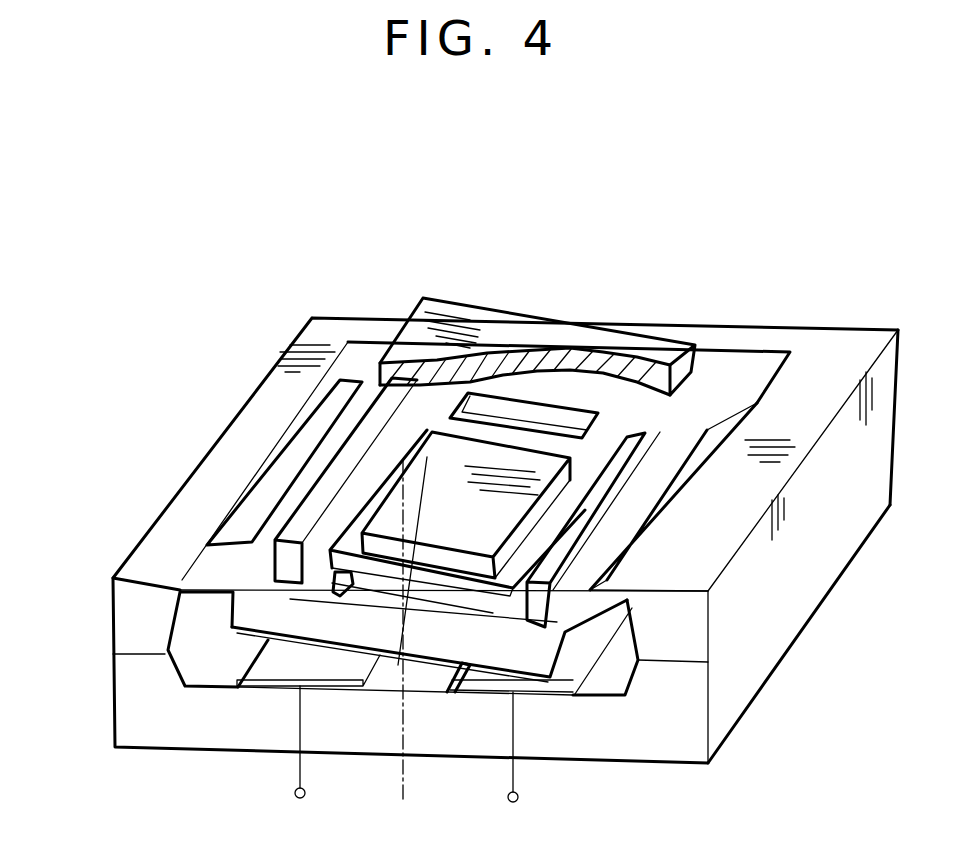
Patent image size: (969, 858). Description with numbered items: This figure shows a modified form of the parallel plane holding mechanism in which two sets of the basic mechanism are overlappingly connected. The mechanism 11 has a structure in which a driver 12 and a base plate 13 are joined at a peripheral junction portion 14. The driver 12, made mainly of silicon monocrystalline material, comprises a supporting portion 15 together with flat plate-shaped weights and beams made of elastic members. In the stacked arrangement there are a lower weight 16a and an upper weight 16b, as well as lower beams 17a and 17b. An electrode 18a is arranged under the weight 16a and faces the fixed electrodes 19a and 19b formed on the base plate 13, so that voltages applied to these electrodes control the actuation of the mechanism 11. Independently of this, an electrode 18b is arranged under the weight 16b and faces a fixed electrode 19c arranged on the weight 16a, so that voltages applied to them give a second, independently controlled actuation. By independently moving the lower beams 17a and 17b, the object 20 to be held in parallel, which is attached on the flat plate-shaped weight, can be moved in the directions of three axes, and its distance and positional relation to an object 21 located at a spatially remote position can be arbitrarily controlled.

The mechanism 11 is at (128, 698).
The driver 12 is at (693, 626).
The base plate 13 is at (688, 725).
The peripheral junction portion 14 is at (133, 654).
The supporting portion 15 is at (120, 608).
The weight 16a is at (527, 628).
The weight 16b is at (337, 547).
The lower beam 17a is at (222, 558).
The lower beam 17b is at (597, 428).
The electrode 18a is at (441, 663).
The electrode 18b is at (343, 588).
The fixed electrode 19a is at (265, 688).
The fixed electrode 19b is at (592, 688).
The fixed electrode 19c is at (440, 604).
The object to be held in parallel 20 is at (466, 617).
The object 21 is at (466, 308).